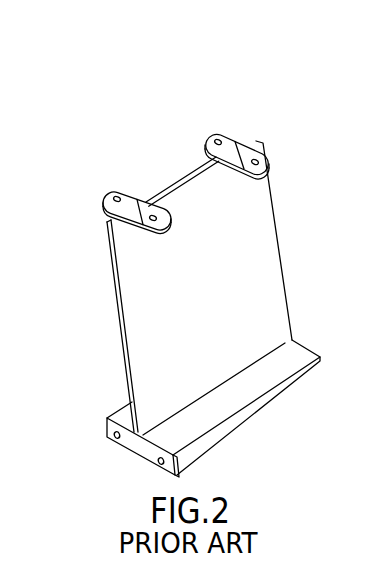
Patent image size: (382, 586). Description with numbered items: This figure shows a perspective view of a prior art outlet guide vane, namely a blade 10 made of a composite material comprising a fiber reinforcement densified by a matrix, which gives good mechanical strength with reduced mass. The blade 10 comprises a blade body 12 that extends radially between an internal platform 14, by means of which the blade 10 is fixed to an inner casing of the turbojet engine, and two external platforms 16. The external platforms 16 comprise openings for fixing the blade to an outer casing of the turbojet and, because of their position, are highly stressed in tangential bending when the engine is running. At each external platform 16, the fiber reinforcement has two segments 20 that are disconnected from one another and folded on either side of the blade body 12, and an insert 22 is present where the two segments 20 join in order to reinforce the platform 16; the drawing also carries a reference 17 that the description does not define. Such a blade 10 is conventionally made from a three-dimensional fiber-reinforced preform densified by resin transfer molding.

The blade 10 is at (211, 294).
The blade body 12 is at (274, 210).
The internal platform 14 is at (233, 393).
The external platform 16 is at (131, 195).
The clip bend tab 17 is at (226, 137).
The segment 20 is at (217, 139).
The insert 22 is at (224, 159).